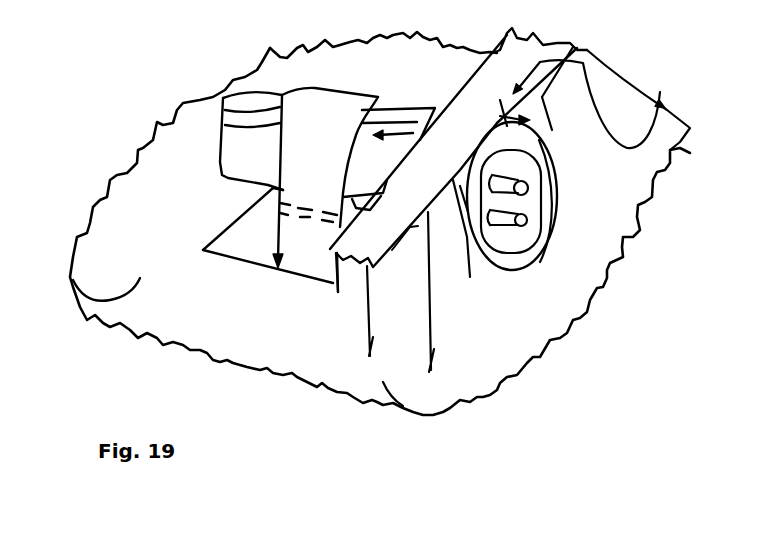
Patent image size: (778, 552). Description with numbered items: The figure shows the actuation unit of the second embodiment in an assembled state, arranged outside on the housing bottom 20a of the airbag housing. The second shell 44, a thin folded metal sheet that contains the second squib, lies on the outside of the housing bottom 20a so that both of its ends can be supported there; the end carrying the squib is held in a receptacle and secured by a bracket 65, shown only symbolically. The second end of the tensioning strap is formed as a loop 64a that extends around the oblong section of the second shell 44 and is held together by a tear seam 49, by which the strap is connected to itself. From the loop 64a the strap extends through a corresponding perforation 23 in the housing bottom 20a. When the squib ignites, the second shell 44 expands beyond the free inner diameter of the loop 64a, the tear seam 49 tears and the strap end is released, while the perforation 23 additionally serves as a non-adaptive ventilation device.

The housing bottom 20a is at (73, 288).
The perforation 23 is at (248, 240).
The second shell 44 is at (236, 149).
The tear seam 49 is at (277, 217).
The loop 64a is at (318, 111).
The bracket 65 is at (670, 150).